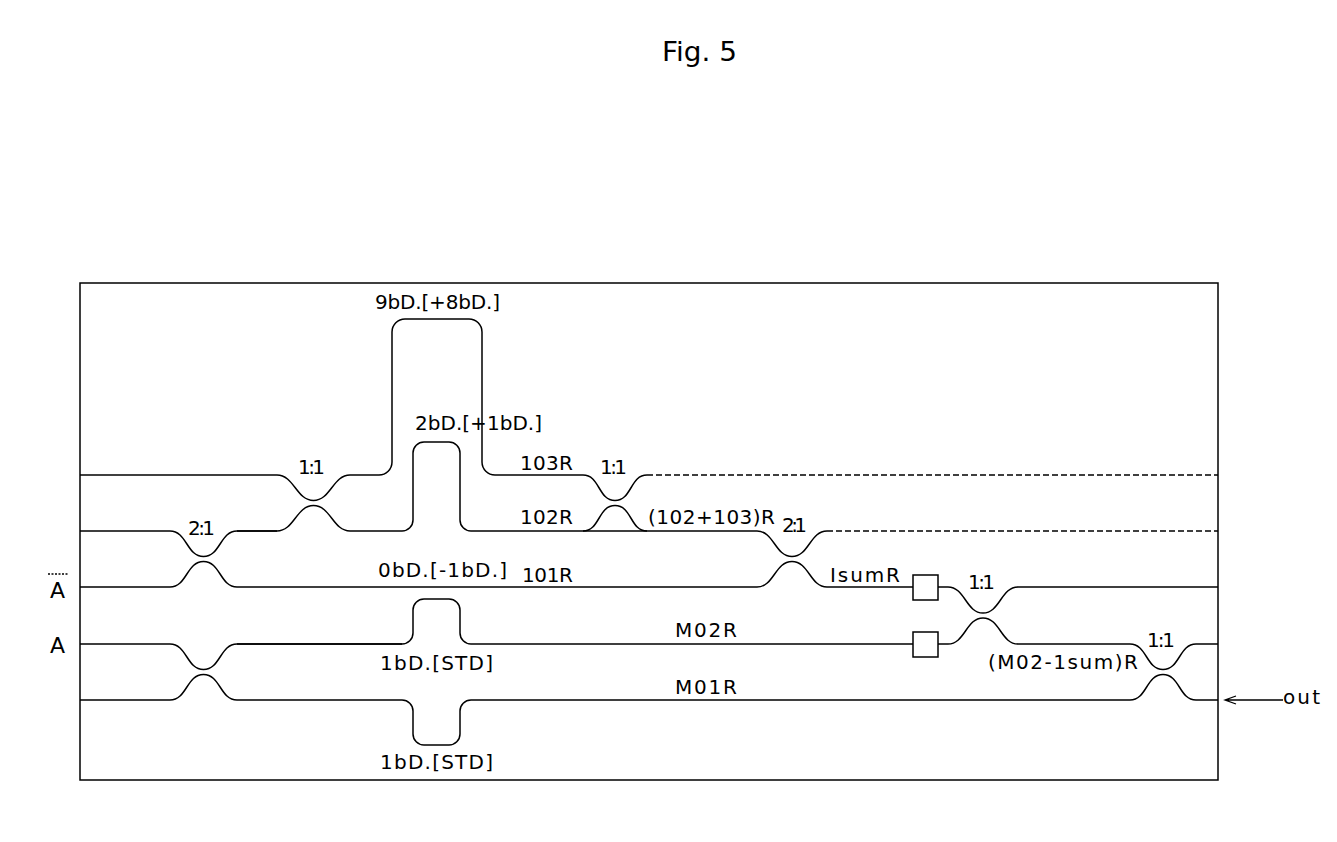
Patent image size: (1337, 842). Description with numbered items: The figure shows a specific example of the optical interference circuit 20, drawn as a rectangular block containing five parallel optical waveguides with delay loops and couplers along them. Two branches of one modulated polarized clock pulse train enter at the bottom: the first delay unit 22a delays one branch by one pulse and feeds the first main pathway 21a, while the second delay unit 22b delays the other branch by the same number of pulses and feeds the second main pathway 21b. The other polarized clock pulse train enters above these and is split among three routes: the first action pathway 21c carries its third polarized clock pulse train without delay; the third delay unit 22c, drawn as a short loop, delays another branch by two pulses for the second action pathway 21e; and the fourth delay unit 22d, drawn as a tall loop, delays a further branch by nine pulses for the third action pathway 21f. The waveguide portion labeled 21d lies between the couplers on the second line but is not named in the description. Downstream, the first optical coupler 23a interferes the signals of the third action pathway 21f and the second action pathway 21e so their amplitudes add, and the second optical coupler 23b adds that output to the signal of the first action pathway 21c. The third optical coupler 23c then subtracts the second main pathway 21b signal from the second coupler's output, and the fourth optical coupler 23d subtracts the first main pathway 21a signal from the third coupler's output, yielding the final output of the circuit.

The optical interference circuit 20 is at (547, 283).
The first main pathway 21a is at (272, 700).
The second main pathway 21b is at (272, 644).
The first action pathway 21c is at (272, 587).
The waveguide 21d is at (262, 531).
The second action pathway 21e is at (378, 531).
The third action pathway 21f is at (362, 474).
The first delay unit 22a is at (462, 720).
The second delay unit 22b is at (462, 612).
The third delay unit 22c is at (462, 500).
The fourth delay unit 22d is at (482, 385).
The first optical coupler 23a is at (635, 455).
The second optical coupler 23b is at (817, 517).
The third optical coupler 23c is at (1007, 573).
The fourth optical coupler 23d is at (1186, 623).